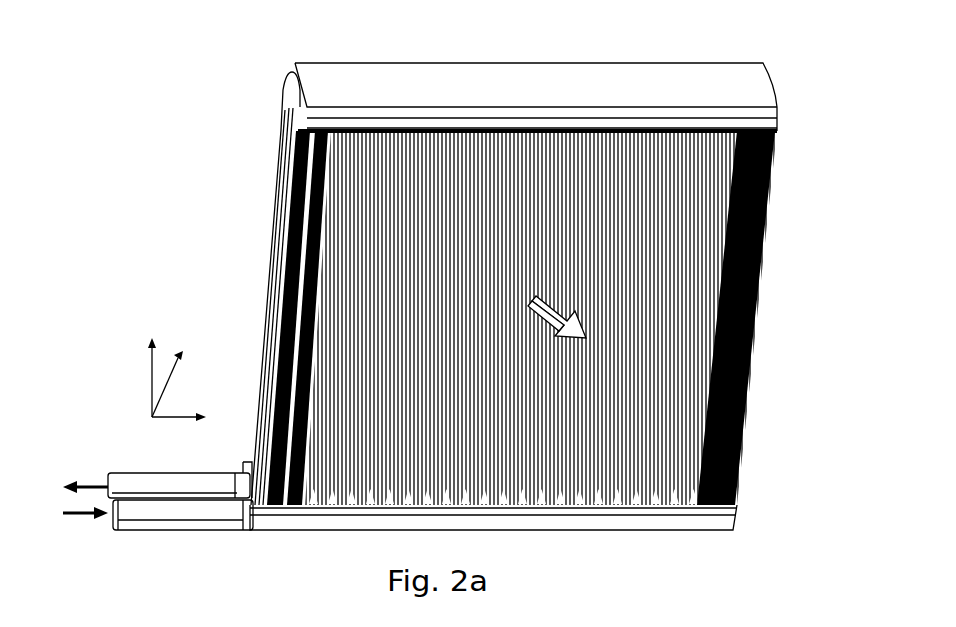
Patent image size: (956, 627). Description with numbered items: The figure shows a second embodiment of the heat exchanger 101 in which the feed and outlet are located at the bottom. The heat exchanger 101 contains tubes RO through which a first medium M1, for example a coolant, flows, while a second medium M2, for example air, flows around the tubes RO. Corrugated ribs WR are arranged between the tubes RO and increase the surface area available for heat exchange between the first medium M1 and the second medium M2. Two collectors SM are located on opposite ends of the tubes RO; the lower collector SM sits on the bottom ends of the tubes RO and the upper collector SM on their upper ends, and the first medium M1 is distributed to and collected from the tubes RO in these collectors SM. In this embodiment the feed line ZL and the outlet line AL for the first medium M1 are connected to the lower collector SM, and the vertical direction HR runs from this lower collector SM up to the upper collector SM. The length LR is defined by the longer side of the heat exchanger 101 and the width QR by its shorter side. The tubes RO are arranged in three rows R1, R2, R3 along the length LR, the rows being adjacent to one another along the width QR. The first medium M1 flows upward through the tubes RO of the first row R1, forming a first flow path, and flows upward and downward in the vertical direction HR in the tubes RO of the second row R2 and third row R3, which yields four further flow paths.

The heat exchanger 101 is at (253, 92).
The collector SM is at (530, 92).
The corrugated ribs WR is at (260, 300).
The first row R1 is at (280, 263).
The second row R2 is at (278, 227).
The third row R3 is at (280, 178).
The tubes RO is at (748, 453).
The second medium M2 is at (567, 332).
The outlet line AL is at (128, 483).
The feed line ZL is at (132, 512).
The first medium M1 is at (82, 517).
The vertical direction HR is at (132, 374).
The width QR is at (187, 377).
The length LR is at (197, 415).